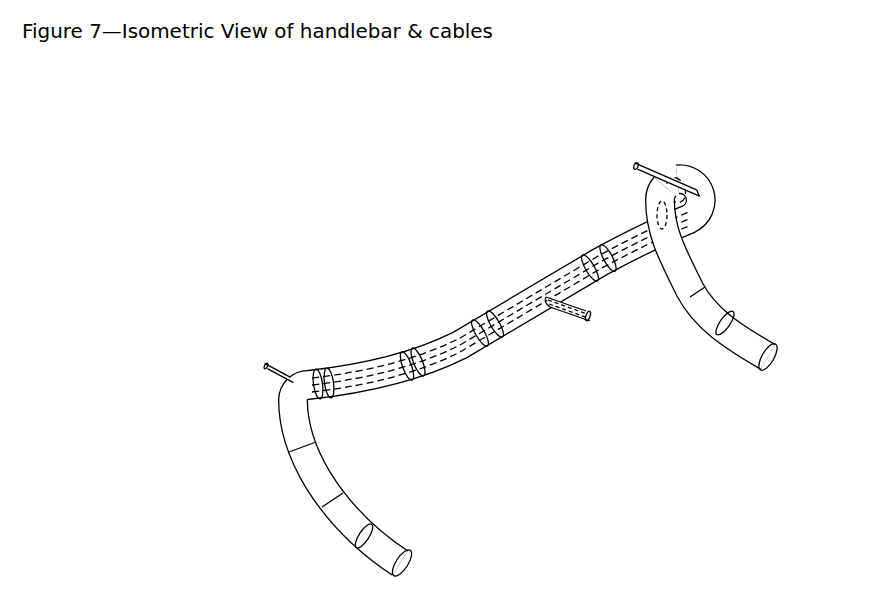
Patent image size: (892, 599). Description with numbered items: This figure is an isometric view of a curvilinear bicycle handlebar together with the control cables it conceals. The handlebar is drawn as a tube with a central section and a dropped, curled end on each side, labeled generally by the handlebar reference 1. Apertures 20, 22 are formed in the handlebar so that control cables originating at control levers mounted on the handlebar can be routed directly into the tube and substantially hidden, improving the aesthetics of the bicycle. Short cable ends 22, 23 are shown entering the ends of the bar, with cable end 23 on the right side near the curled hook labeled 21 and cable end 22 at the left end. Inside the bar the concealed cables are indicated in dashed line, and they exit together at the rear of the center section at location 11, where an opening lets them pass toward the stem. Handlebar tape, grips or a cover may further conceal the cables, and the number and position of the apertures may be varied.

The handlebar 1 is at (562, 377).
The cables exiting handlebar 11 is at (548, 310).
The aperture 20 is at (305, 365).
The right end of handlebar 21 is at (652, 186).
The aperture 22 is at (265, 368).
The right cable end 23 is at (647, 158).